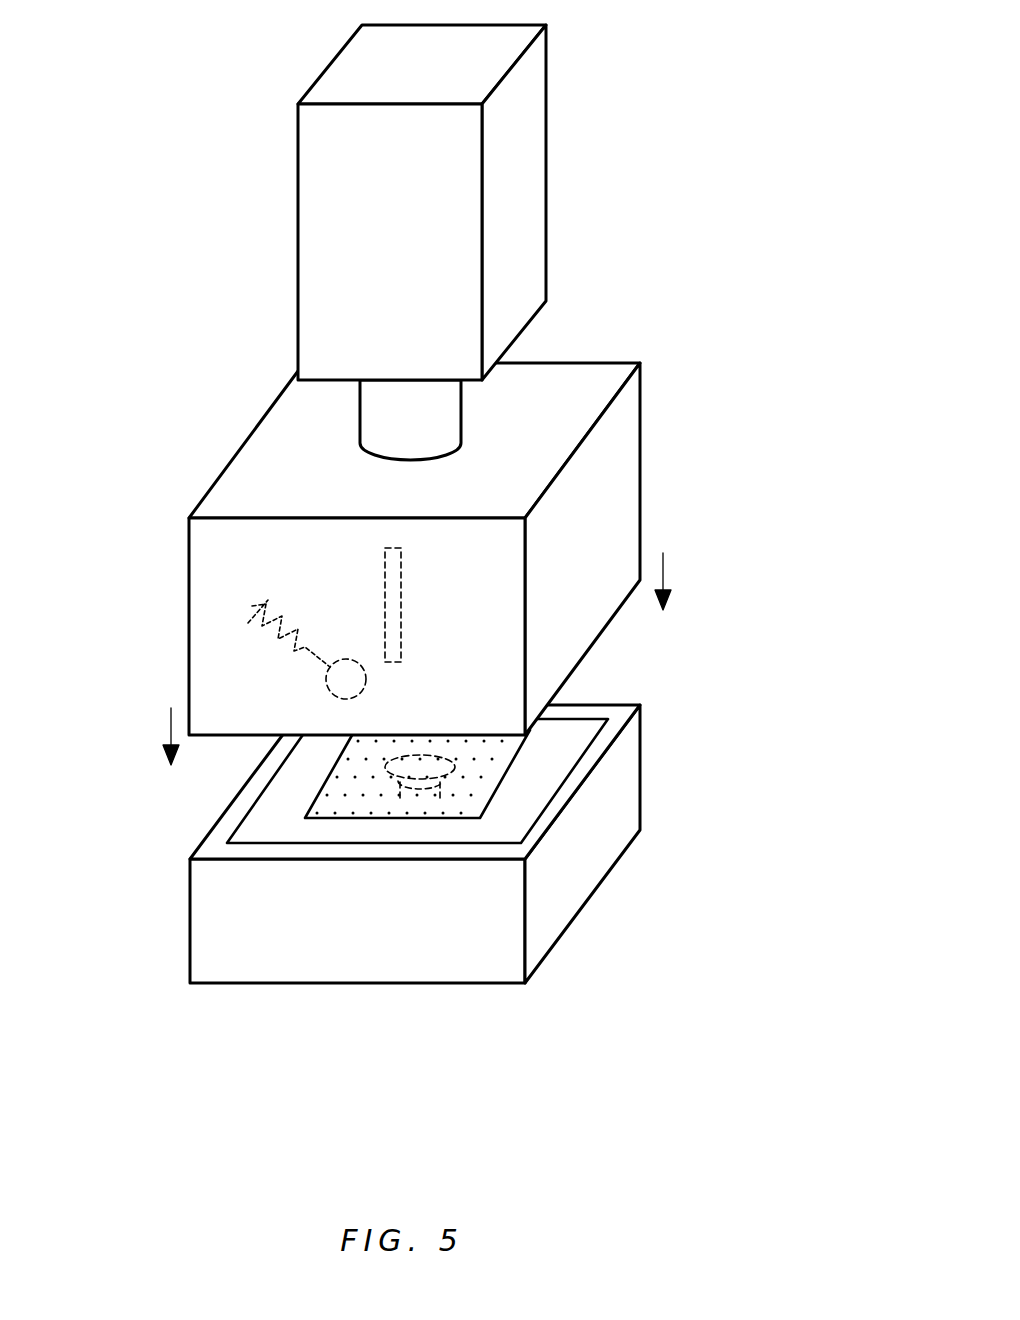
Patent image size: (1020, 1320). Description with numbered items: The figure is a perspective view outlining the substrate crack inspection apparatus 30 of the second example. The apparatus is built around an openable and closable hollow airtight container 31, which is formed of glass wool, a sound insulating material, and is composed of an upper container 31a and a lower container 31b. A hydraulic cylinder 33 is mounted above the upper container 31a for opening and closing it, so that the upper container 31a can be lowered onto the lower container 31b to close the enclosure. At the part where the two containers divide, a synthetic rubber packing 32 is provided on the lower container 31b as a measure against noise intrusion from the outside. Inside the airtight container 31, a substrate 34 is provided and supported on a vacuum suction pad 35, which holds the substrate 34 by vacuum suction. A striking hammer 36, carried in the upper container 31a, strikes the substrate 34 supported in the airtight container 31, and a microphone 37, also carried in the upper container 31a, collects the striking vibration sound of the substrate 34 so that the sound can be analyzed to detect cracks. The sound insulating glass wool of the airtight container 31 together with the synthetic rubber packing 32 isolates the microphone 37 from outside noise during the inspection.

The substrate crack inspection apparatus 30 is at (444, 613).
The airtight container 31 is at (439, 723).
The upper container 31a is at (602, 507).
The lower container 31b is at (307, 958).
The synthetic rubber packing 32 is at (542, 827).
The press head drive unit 33 is at (335, 235).
The substrate 34 is at (485, 757).
The vacuum suction pad 35 is at (420, 782).
The striking hammer 36 is at (272, 687).
The microphone 37 is at (397, 580).